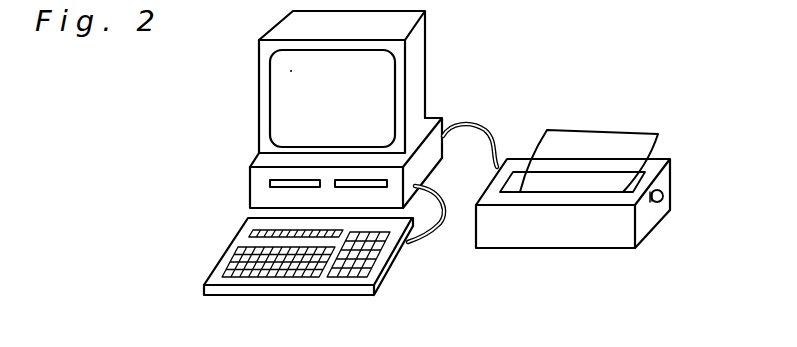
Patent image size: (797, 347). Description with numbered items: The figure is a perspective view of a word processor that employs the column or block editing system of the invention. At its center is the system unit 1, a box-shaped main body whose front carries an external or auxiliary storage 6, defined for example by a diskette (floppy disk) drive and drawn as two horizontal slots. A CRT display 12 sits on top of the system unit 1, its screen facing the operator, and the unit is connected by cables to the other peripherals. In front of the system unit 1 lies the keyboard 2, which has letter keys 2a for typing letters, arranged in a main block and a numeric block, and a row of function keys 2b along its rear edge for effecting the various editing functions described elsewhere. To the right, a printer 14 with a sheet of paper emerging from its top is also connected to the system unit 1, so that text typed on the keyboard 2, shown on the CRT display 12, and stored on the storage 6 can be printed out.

The system unit 1 is at (249, 190).
The keyboard 2 is at (262, 297).
The letter keys 2a is at (295, 253).
The function keys 2b is at (251, 233).
The external or auxiliary storage 6 is at (283, 181).
The CRT display 12 is at (390, 27).
The printer 14 is at (668, 158).